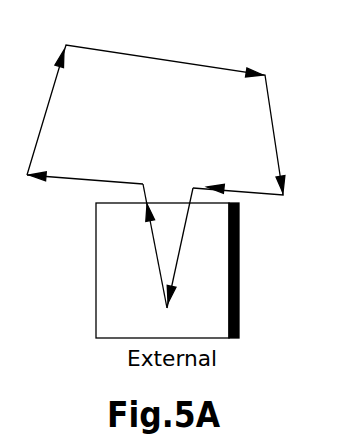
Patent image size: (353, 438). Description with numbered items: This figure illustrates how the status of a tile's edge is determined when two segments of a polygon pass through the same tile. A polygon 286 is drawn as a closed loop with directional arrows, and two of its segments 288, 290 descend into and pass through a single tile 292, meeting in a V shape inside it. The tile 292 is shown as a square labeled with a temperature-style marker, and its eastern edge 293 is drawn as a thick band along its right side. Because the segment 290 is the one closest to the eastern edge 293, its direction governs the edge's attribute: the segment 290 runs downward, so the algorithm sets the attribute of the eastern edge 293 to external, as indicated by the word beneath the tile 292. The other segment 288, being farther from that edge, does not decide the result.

The polygon 286 is at (158, 85).
The segment 288 is at (153, 247).
The segment 290 is at (188, 223).
The tile 292 is at (106, 316).
The eastern edge 293 is at (239, 288).